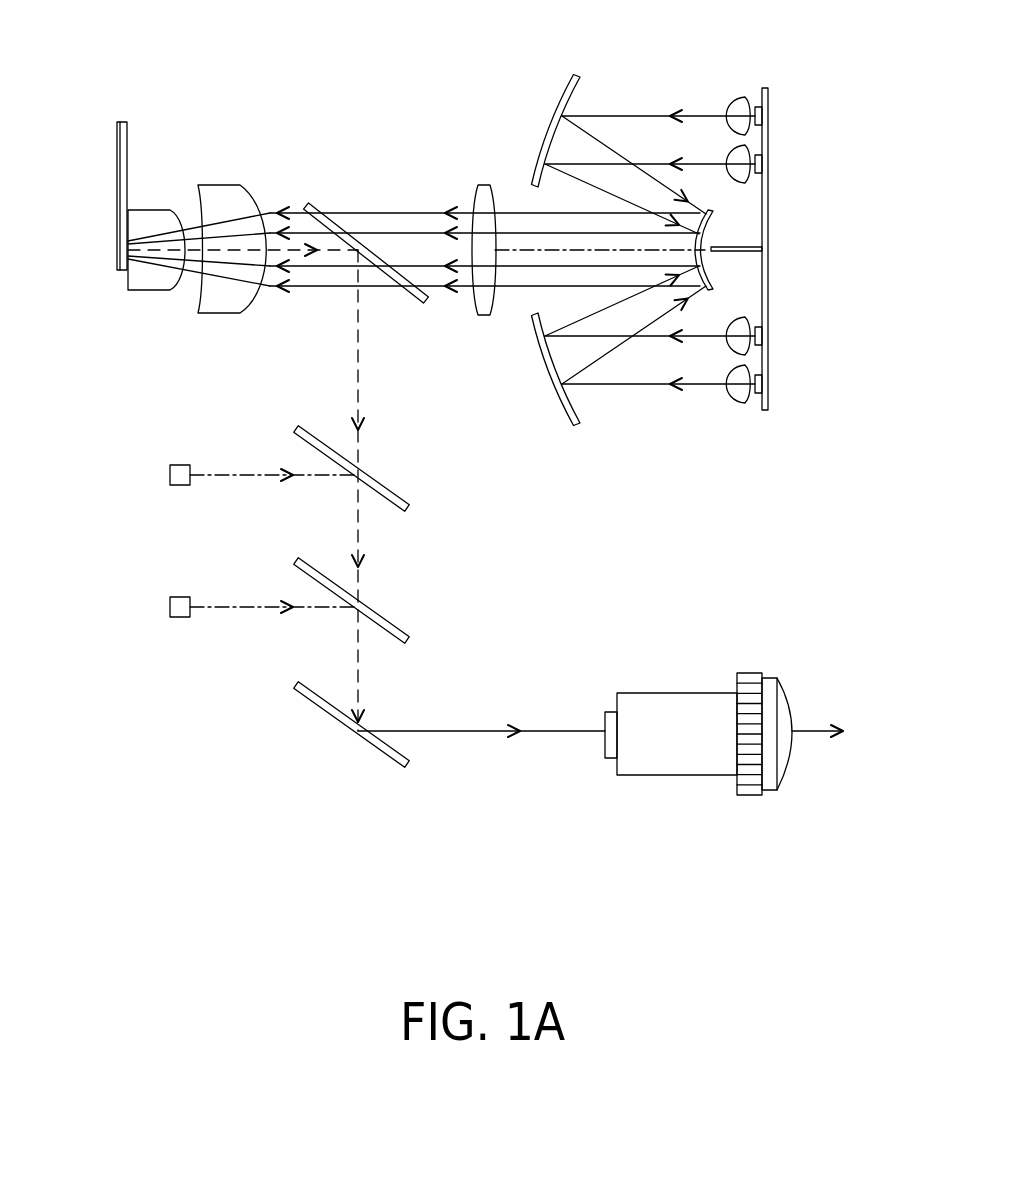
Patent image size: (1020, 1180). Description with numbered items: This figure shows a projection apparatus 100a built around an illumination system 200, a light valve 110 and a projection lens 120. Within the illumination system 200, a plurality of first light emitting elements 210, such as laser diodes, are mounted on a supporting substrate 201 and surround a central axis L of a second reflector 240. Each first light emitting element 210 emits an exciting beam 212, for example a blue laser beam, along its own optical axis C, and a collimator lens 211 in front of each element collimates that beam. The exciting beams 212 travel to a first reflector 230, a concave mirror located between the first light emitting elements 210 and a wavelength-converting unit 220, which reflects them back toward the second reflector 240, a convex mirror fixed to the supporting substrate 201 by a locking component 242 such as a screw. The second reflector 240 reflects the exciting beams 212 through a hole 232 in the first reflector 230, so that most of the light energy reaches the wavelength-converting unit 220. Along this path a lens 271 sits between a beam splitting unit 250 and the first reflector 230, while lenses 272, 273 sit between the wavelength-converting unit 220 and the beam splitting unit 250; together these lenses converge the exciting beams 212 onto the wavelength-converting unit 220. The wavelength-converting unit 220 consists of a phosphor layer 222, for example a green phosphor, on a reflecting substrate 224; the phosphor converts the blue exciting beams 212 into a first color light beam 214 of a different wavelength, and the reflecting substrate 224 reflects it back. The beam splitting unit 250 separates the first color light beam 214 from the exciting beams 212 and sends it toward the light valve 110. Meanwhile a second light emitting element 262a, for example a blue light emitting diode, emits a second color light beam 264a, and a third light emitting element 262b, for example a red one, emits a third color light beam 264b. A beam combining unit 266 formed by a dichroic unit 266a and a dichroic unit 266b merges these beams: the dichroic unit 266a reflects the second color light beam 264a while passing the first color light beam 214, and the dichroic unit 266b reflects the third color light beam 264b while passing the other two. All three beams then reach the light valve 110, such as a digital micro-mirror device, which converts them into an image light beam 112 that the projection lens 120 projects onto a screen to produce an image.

The projection apparatus 100a is at (917, 937).
The light valve 110 is at (393, 767).
The image light beam 112 is at (553, 735).
The projection lens 120 is at (673, 758).
The illumination system 200 is at (162, 72).
The supporting substrate 201 is at (768, 92).
The first light emitting elements 210 is at (761, 118).
The collimator lenses 211 is at (737, 102).
The exciting beams 212 is at (295, 210).
The first color light beam 214 is at (197, 252).
The wavelength-converting unit 220 is at (90, 271).
The phosphor layer 222 is at (123, 270).
The reflecting substrate 224 is at (117, 260).
The first reflector 230 is at (558, 112).
The hole 232 is at (536, 184).
The second reflector 240 is at (707, 210).
The locking component 242 is at (742, 248).
The beam splitting unit 250 is at (313, 203).
The second light emitting element 262a is at (170, 475).
The third light emitting element 262b is at (170, 607).
The second color light beam 264a is at (238, 477).
The third color light beam 264b is at (238, 609).
The beam combining unit 266 is at (432, 561).
The dichroic unit 266a is at (397, 505).
The dichroic unit 266b is at (397, 637).
The lens 271 is at (473, 198).
The lens 272 is at (217, 185).
The lens 273 is at (148, 210).
The optical axis C is at (712, 208).
The central axis L is at (533, 252).